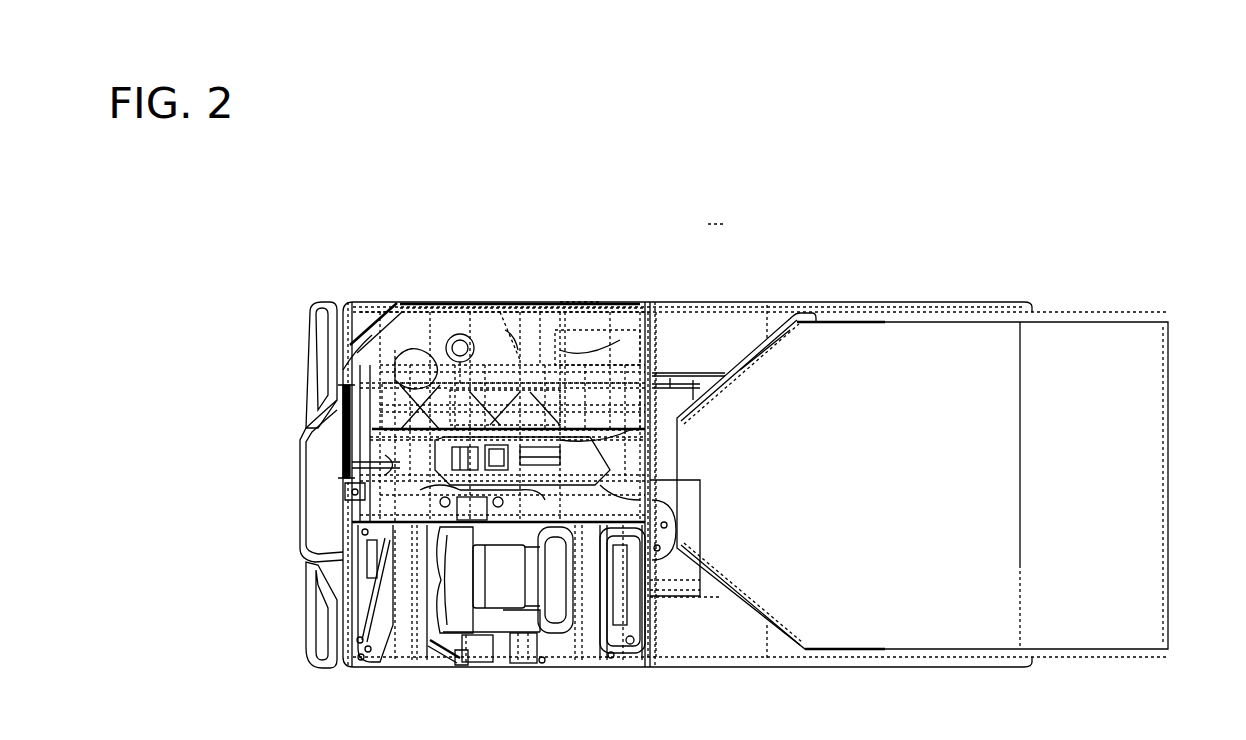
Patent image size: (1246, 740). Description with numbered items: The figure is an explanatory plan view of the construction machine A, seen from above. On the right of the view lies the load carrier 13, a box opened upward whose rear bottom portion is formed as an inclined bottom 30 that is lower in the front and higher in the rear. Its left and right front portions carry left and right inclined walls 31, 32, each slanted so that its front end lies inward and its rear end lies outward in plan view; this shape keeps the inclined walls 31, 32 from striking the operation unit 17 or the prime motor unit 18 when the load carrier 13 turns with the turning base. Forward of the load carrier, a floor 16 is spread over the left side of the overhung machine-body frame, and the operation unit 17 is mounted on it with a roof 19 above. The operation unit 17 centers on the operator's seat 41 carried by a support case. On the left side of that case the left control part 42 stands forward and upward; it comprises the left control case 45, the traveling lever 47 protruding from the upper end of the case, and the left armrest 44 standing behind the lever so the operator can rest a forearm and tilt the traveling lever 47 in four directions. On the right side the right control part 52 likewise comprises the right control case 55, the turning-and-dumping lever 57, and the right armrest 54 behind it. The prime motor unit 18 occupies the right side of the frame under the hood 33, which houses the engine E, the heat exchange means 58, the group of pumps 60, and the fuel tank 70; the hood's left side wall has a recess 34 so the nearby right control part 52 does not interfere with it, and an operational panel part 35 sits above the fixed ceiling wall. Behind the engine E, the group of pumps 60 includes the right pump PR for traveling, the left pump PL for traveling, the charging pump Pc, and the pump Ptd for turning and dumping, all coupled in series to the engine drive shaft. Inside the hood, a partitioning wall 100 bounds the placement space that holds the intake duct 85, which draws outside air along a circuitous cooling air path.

The load carrier 13 is at (866, 489).
The floor 16 is at (402, 612).
The operation unit 17 is at (432, 572).
The prime motor unit 18 is at (425, 300).
The roof 19 is at (345, 440).
The inclined bottom 30 is at (1118, 448).
The left inclined wall 31 is at (740, 612).
The right inclined wall 32 is at (757, 355).
The hood 33 is at (535, 345).
The recess 34 is at (578, 495).
The operational panel part 35 is at (385, 465).
The operator's seat 41 is at (491, 584).
The left control part 42 is at (461, 685).
The left armrest 44 is at (473, 670).
The left control case 45 is at (500, 662).
The traveling lever 47 is at (432, 657).
The right control part 52 is at (455, 402).
The right armrest 54 is at (525, 402).
The right control case 55 is at (508, 503).
The turning-and-dumping lever 57 is at (345, 485).
The heat exchange means 58 is at (310, 348).
The group of pumps 60 is at (582, 350).
The fuel tank 70 is at (392, 304).
The intake duct 85 is at (575, 300).
The partitioning wall 100 is at (657, 325).
The engine E is at (462, 335).
The left pump for traveling PL is at (565, 330).
The right pump for traveling PR is at (648, 310).
The charging pump Pc is at (657, 375).
The pump for turning and dumping Ptd is at (690, 388).
The construction machine A is at (716, 215).